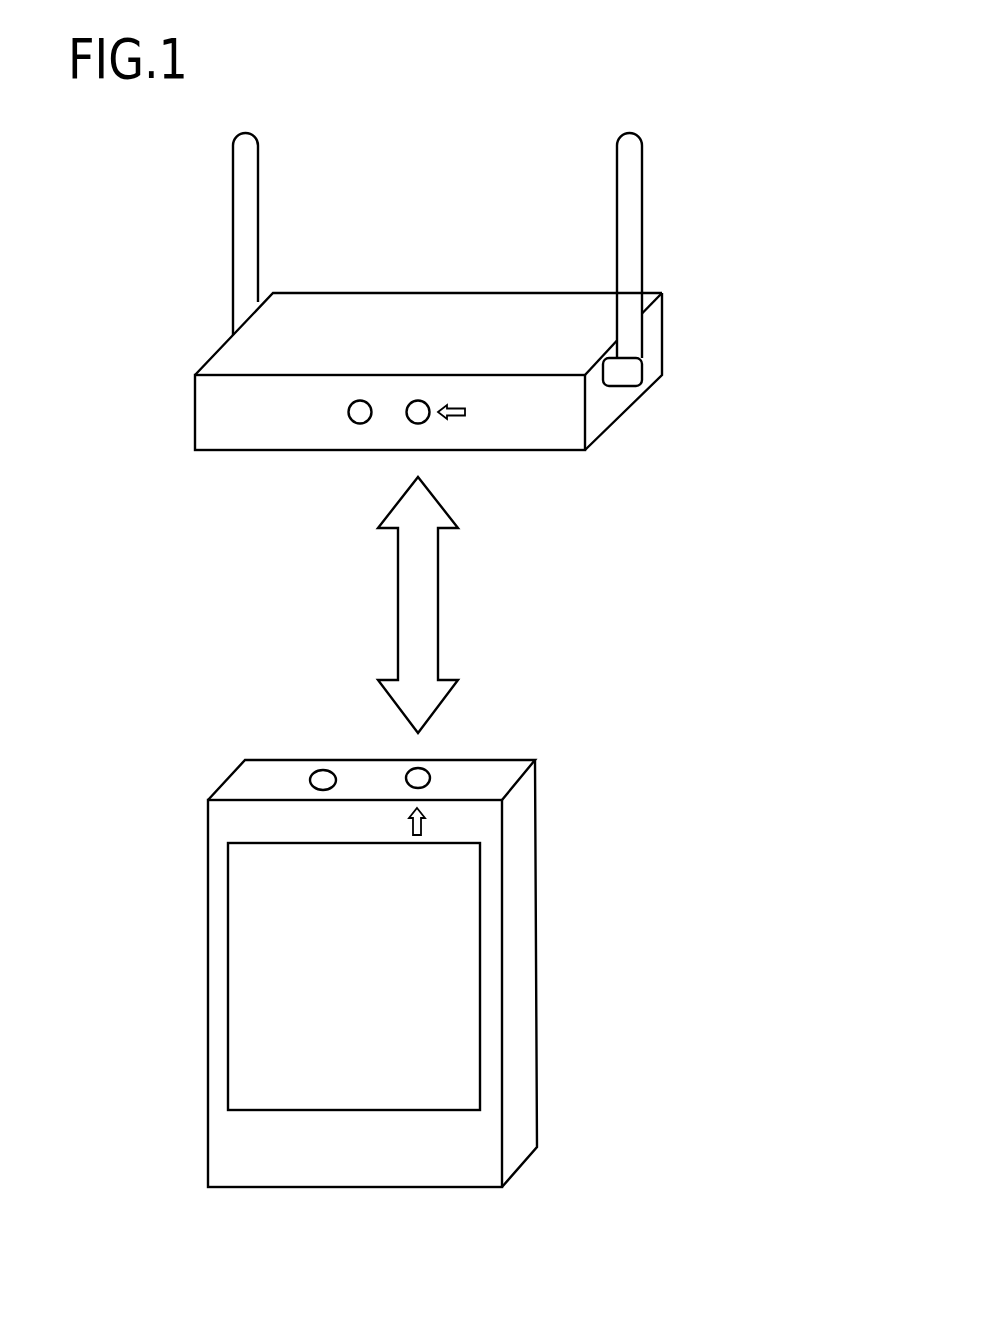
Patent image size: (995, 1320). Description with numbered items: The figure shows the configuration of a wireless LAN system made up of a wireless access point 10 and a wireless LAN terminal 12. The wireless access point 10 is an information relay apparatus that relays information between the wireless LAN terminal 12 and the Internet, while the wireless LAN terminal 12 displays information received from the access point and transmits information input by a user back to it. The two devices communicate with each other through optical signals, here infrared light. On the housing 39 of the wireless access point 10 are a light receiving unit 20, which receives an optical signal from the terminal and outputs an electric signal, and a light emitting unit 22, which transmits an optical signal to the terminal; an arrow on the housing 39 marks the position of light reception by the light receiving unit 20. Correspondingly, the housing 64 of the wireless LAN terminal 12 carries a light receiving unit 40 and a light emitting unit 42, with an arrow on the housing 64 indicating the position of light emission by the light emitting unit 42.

The wireless access point 10 is at (532, 354).
The wireless LAN terminal 12 is at (442, 934).
The light receiving unit 20 is at (428, 419).
The light emitting unit 22 is at (349, 403).
The housing 39 is at (478, 293).
The light receiving unit 40 is at (310, 780).
The light emitting unit 42 is at (430, 777).
The housing 64 is at (537, 877).